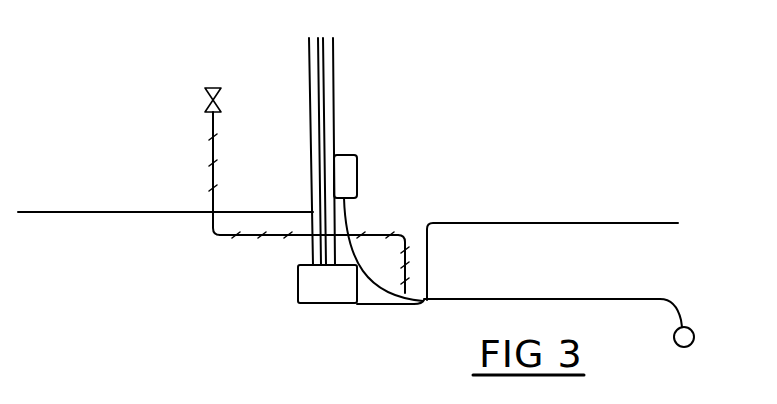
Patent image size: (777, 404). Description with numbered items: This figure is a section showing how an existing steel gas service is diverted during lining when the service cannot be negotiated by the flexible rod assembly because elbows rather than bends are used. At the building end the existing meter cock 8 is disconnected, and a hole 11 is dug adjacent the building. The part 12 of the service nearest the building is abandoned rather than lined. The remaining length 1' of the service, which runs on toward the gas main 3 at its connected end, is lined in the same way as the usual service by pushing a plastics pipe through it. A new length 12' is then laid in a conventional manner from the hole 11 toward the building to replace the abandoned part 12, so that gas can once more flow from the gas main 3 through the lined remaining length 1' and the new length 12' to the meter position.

The meter cock 8 is at (208, 97).
The part of the service 12 is at (309, 271).
The new length 12' is at (391, 229).
The hole 11 is at (412, 243).
The remaining length 1' is at (553, 283).
The gas main 3 is at (692, 329).